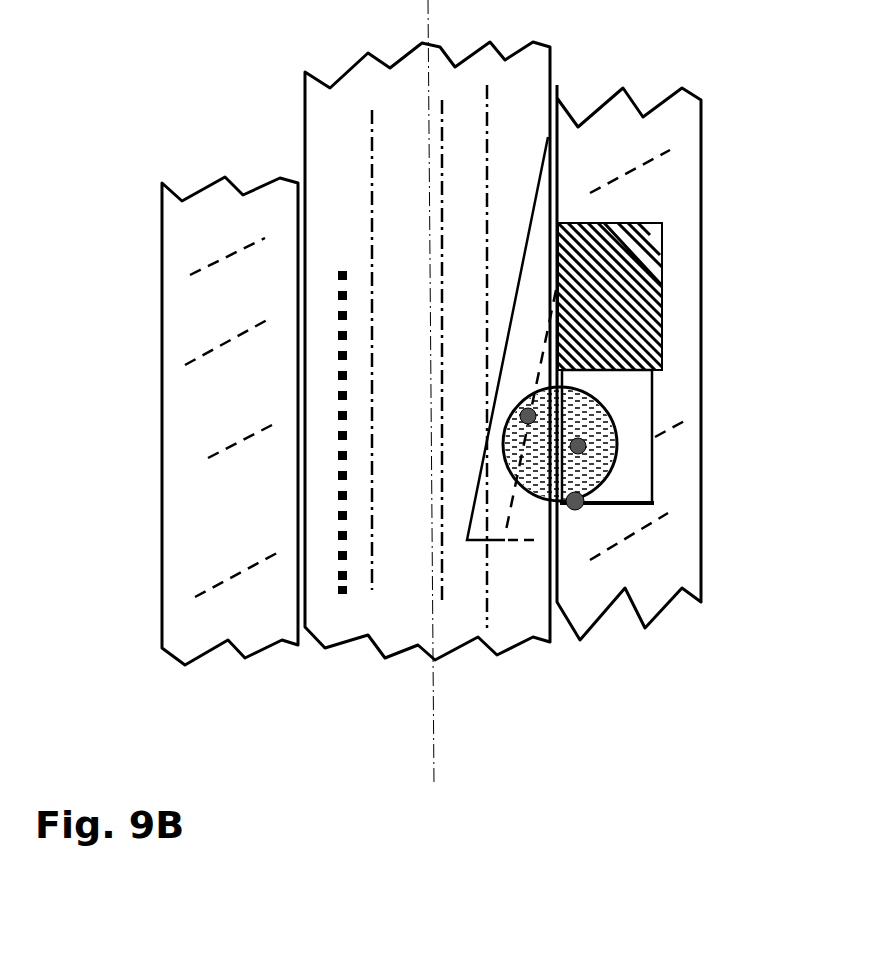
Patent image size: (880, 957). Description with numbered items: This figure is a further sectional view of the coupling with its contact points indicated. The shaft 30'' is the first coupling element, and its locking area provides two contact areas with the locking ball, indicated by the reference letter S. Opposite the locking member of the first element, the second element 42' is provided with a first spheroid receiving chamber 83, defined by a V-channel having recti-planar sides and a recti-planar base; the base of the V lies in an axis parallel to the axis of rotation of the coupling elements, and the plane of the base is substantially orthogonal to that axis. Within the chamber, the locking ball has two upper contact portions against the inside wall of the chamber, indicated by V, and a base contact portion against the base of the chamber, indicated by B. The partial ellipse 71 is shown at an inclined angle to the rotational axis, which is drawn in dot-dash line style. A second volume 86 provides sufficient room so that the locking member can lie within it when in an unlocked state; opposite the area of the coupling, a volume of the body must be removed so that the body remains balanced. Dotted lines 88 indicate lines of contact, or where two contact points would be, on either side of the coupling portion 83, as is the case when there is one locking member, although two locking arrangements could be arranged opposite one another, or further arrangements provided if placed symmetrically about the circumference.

The contact portions with the first element S is at (522, 415).
The upper contact portions V is at (585, 446).
The base contact portion B is at (585, 499).
The second volume 86 is at (662, 253).
The first spheroid receiving chamber 83 is at (648, 396).
The shaft 30'' is at (294, 351).
The partial ellipse 71 is at (515, 483).
The second element 42' is at (168, 421).
The dotted lines 88 is at (338, 575).